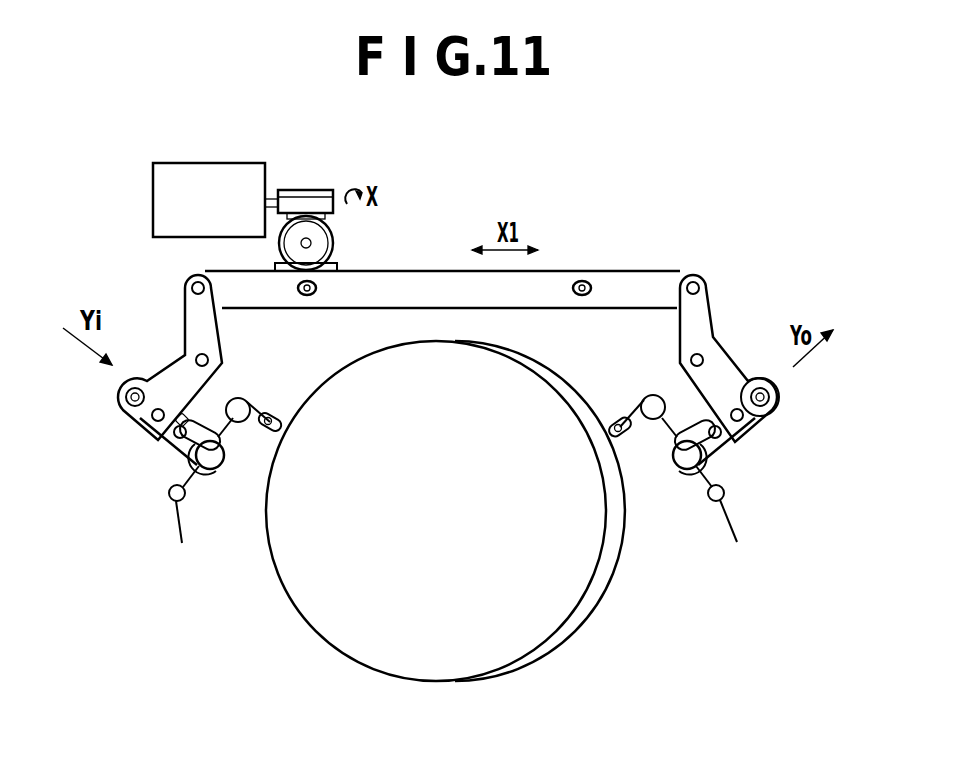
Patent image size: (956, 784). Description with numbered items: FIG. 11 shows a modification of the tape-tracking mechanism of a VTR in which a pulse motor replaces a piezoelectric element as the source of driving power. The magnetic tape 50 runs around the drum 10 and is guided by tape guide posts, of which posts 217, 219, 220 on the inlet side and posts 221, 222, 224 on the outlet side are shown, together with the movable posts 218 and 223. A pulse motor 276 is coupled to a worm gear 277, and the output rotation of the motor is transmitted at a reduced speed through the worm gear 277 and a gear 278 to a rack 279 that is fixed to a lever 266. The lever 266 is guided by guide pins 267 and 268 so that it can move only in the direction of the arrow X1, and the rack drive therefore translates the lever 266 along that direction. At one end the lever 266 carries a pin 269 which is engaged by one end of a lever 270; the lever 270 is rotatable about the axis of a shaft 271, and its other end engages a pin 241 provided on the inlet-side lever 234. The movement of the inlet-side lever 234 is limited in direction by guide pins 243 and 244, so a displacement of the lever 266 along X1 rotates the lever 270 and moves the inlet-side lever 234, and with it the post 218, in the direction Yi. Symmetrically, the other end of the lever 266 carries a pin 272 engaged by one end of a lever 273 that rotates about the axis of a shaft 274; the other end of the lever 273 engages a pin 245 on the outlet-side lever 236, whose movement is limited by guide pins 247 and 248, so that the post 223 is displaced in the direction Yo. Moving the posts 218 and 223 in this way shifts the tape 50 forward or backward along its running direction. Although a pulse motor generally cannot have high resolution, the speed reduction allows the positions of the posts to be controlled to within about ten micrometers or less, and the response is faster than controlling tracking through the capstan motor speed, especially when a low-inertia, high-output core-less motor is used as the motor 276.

The drum 10 is at (356, 362).
The magnetic tape 50 is at (176, 534).
The tape guide post 217 is at (170, 495).
The tape guide post 218 is at (196, 464).
The tape guide post 219 is at (238, 398).
The tape guide post 220 is at (276, 413).
The tape guide post 221 is at (612, 420).
The tape guide post 222 is at (650, 396).
The tape guide post 223 is at (701, 462).
The tape guide post 224 is at (724, 494).
The inlet-side lever 234 is at (135, 410).
The outlet-side lever 236 is at (760, 418).
The pin 241 is at (148, 437).
The guide pin 243 is at (125, 394).
The guide pin 244 is at (226, 452).
The pin 245 is at (756, 386).
The guide pin 247 is at (771, 394).
The guide pin 248 is at (680, 457).
The lever 266 is at (648, 278).
The guide pin 267 is at (305, 296).
The guide pin 268 is at (583, 280).
The pin 269 is at (186, 283).
The lever 270 is at (185, 313).
The shaft 271 is at (195, 360).
The pin 272 is at (704, 281).
The lever 273 is at (711, 296).
The shaft 274 is at (703, 356).
The pulse motor 276 is at (217, 172).
The worm gear 277 is at (316, 189).
The gear 278 is at (320, 242).
The rack 279 is at (340, 265).